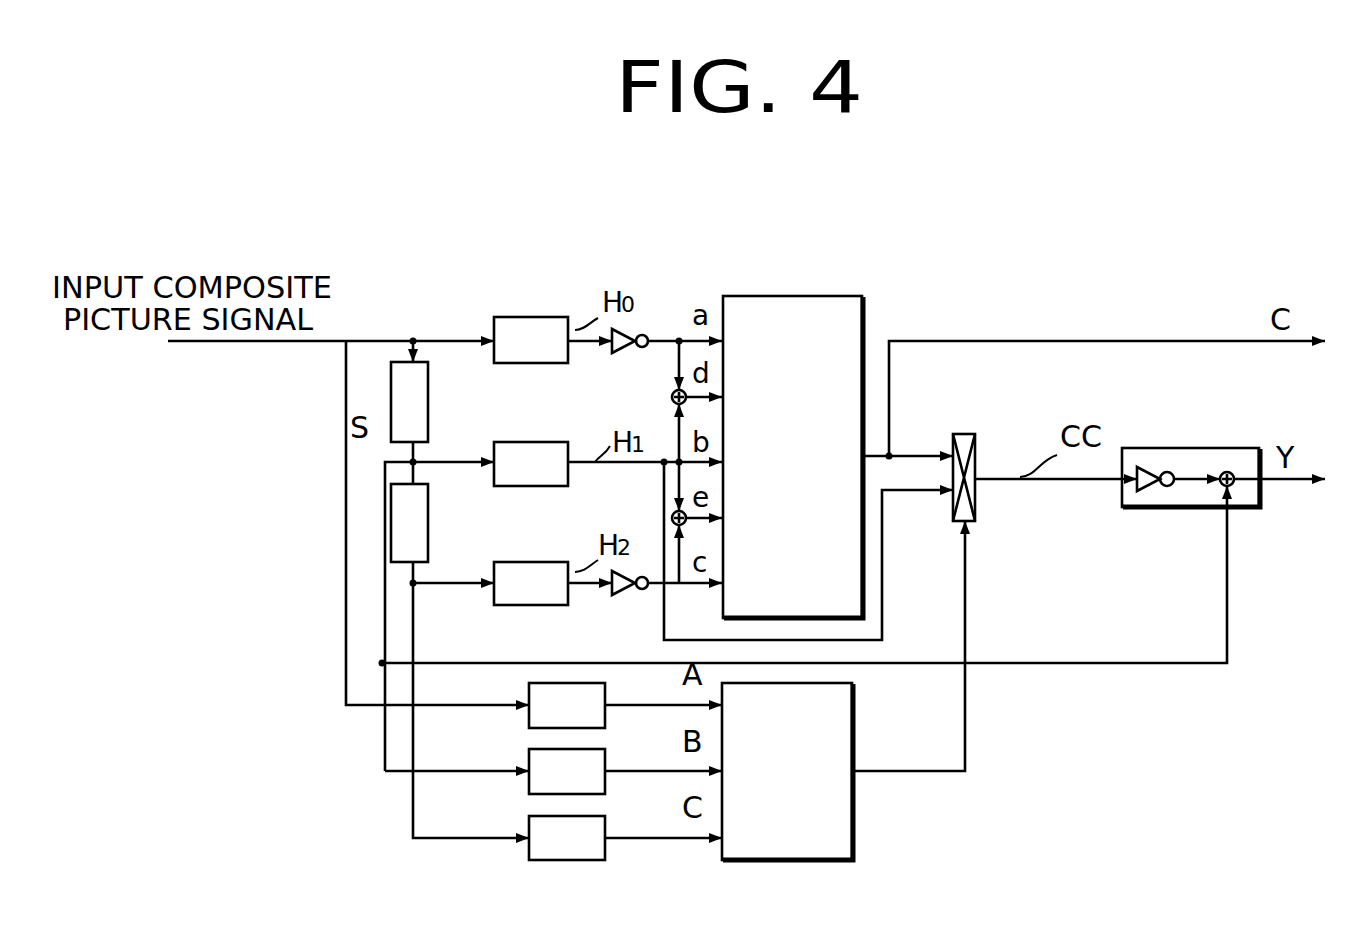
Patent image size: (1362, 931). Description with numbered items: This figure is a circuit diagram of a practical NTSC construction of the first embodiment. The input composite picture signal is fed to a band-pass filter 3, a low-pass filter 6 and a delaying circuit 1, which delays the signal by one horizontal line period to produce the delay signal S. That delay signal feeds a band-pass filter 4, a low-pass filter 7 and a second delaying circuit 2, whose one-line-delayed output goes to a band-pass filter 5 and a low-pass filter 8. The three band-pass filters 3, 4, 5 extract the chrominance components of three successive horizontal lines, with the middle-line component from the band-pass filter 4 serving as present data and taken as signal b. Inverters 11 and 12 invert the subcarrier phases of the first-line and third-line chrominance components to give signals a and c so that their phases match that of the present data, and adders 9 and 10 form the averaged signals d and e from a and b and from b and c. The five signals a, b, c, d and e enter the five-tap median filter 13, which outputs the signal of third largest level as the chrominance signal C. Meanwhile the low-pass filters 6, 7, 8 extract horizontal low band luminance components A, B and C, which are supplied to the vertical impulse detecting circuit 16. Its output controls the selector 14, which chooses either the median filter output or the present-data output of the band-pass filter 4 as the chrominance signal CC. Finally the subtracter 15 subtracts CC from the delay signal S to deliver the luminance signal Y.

The delaying circuit 1 is at (428, 413).
The delaying circuit 2 is at (428, 534).
The band-pass filter 3 is at (528, 363).
The band-pass filter 4 is at (528, 486).
The band-pass filter 5 is at (532, 605).
The low-pass filter 6 is at (529, 720).
The low-pass filter 7 is at (529, 783).
The low-pass filter 8 is at (529, 850).
The adder 9 is at (672, 397).
The adder 10 is at (672, 518).
The inverter 11 is at (632, 323).
The inverter 12 is at (626, 592).
The five-tap median filter 13 is at (775, 296).
The selector 14 is at (975, 460).
The subtracter 15 is at (1172, 448).
The vertical impulse detecting circuit 16 is at (852, 728).